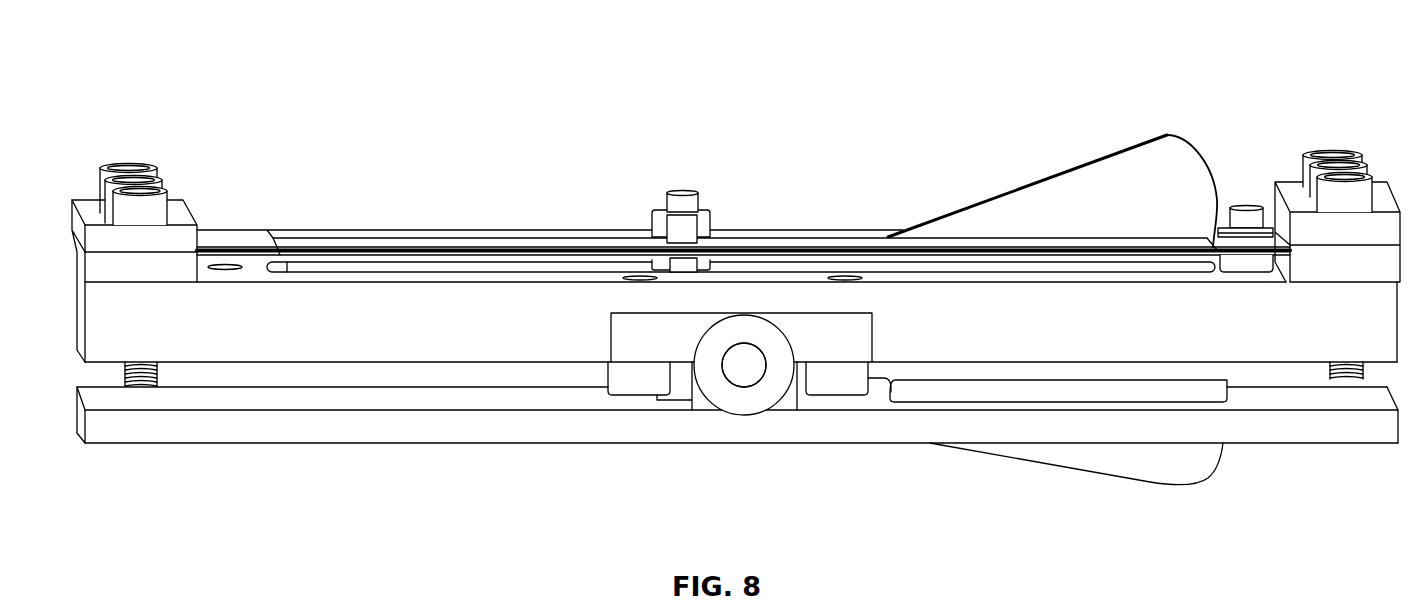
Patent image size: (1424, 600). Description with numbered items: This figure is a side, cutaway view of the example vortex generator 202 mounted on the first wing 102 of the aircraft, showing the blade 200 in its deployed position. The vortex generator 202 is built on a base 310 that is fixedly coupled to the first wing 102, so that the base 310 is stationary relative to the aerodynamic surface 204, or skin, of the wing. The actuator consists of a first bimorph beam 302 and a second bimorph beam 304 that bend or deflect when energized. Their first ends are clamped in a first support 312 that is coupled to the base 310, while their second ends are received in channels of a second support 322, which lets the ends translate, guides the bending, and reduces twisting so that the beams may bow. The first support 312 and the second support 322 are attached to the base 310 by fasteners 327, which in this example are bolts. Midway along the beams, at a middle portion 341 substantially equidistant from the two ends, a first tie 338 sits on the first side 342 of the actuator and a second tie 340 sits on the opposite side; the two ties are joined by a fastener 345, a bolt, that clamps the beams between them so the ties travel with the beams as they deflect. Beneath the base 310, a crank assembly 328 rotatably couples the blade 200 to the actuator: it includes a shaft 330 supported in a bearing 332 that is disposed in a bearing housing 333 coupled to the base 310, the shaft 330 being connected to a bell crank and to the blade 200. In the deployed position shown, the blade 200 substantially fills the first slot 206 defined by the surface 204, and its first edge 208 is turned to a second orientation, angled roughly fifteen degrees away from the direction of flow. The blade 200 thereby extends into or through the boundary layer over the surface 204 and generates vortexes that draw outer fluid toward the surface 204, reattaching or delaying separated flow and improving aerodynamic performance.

The first wing 102 is at (294, 458).
The blade 200 is at (1100, 172).
The vortex generator 202 is at (183, 57).
The aerodynamic surface 204 is at (1327, 437).
The first slot 206 is at (1240, 397).
The first edge 208 is at (1157, 483).
The first bimorph beam 302 is at (318, 233).
The second bimorph beam 304 is at (368, 246).
The base 310 is at (1377, 325).
The first support 312 is at (146, 240).
The second support 322 is at (1357, 223).
The fasteners 327 is at (127, 165).
The crank assembly 328 is at (772, 389).
The shaft 330 is at (738, 368).
The bearing 332 is at (712, 390).
The bearing housing 333 is at (622, 343).
The first tie 338 is at (652, 222).
The second tie 340 is at (680, 268).
The middle portion 341 is at (668, 188).
The first side 342 is at (796, 218).
The fastener 345 is at (680, 198).